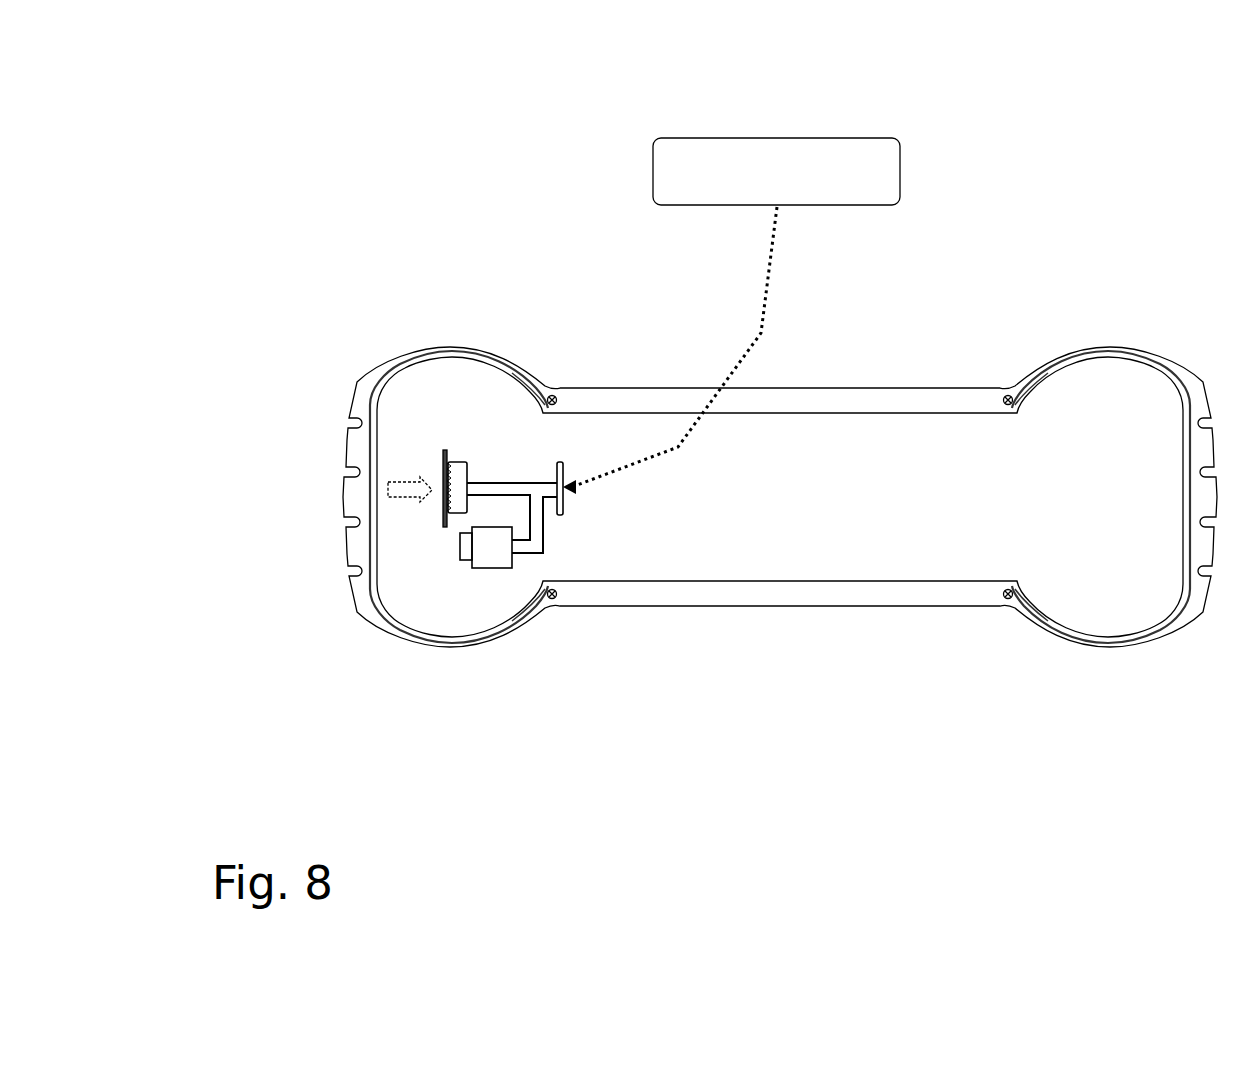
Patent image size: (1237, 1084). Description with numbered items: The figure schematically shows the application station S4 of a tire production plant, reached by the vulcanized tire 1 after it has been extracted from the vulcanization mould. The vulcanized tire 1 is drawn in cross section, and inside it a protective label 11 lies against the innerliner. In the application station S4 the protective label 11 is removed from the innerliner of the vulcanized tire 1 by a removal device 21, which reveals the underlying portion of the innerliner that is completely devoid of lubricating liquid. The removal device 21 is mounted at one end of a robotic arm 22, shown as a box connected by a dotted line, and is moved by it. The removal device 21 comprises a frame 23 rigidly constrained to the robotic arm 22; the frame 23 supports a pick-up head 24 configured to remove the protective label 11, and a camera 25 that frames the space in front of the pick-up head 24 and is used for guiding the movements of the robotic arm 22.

The vulcanized tire 1 is at (834, 668).
The protective label 11 is at (445, 452).
The removal device 21 is at (475, 501).
The robotic arm 22 is at (840, 274).
The frame 23 is at (520, 487).
The pick-up head 24 is at (461, 472).
The camera 25 is at (492, 548).
The application station S4 is at (300, 138).